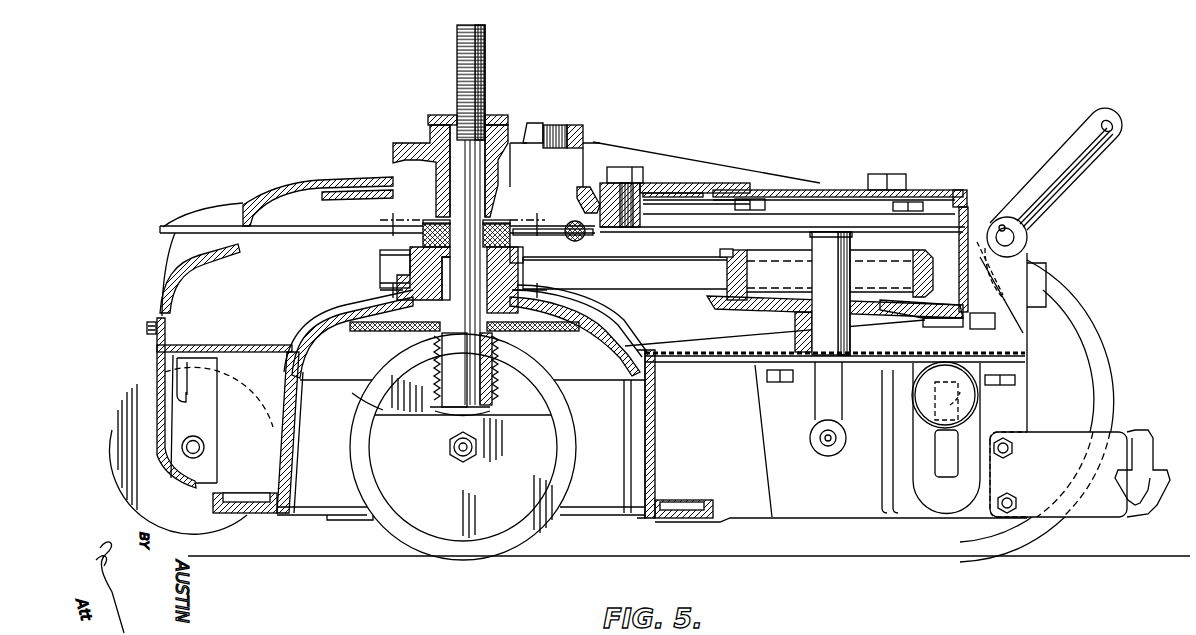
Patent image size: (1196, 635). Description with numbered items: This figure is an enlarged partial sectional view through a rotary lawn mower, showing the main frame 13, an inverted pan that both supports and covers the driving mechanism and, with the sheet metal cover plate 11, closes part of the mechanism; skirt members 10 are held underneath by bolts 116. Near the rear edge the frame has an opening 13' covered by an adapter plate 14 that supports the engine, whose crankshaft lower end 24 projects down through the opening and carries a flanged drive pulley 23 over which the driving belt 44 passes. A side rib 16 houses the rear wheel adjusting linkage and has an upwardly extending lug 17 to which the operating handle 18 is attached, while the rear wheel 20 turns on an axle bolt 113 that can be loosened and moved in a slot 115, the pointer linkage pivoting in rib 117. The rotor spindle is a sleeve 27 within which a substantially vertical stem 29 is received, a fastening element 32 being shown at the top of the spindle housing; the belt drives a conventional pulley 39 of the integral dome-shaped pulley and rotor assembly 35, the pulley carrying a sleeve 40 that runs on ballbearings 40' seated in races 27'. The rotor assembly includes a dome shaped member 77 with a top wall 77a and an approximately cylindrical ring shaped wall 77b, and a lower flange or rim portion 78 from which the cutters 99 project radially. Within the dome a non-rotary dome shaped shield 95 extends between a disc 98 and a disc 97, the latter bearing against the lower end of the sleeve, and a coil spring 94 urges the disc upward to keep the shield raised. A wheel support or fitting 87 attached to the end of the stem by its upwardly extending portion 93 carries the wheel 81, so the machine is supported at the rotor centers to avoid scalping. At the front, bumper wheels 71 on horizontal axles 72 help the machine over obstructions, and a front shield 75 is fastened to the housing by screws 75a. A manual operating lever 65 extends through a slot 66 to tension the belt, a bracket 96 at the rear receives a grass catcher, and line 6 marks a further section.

The skirt member 10 is at (1020, 362).
The sheet metal cover plate 11 is at (677, 357).
The main frame 13 is at (278, 191).
The opening 13' is at (835, 234).
The adapter plate 14 is at (658, 180).
The rib 16 is at (613, 161).
The lug 17 is at (1020, 248).
The operating handle 18 is at (1040, 170).
The rear wheel 20 is at (1112, 370).
The flanged drive pulley 23 is at (767, 249).
The lower end of crankshaft 24 is at (850, 250).
The sleeve 27 is at (506, 252).
The race 27' is at (374, 269).
The stem 29 is at (509, 128).
The nut 32 is at (583, 135).
The dome-shaped pulley and rotor assembly 35 is at (628, 325).
The pulley 39 is at (410, 243).
The sleeve 40 is at (551, 250).
The ballbearing 40' is at (423, 220).
The driving belt 44 is at (607, 267).
The section line 6- 6 is at (271, 302).
The manual operating lever 65 is at (302, 227).
The slot 66 is at (240, 244).
The front bumper wheel 71 is at (115, 443).
The horizontal axle 72 is at (196, 460).
The front shield 75 is at (155, 357).
The screw 75a is at (146, 331).
The dome shaped member 77 is at (657, 420).
The top wall 77a is at (572, 302).
The ring shaped wall 77b is at (656, 439).
The flange or rim portion 78 is at (681, 507).
The wheel 81 is at (458, 552).
The wheel support or fitting 87 is at (508, 412).
The upwardly extending portion 93 is at (432, 407).
The coil spring 94 is at (497, 345).
The non-rotary dome shaped shield 95 is at (607, 348).
The bracket 96 is at (1108, 508).
The disc 97 is at (345, 316).
The disc 98 is at (365, 332).
The cutter 99 is at (435, 338).
The axle bolt 113 is at (941, 372).
The slot 115 is at (953, 465).
The bolt 116 is at (768, 384).
The rib 117 is at (838, 409).